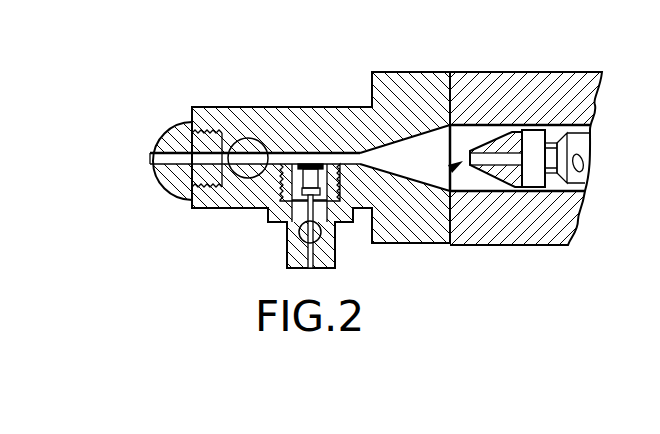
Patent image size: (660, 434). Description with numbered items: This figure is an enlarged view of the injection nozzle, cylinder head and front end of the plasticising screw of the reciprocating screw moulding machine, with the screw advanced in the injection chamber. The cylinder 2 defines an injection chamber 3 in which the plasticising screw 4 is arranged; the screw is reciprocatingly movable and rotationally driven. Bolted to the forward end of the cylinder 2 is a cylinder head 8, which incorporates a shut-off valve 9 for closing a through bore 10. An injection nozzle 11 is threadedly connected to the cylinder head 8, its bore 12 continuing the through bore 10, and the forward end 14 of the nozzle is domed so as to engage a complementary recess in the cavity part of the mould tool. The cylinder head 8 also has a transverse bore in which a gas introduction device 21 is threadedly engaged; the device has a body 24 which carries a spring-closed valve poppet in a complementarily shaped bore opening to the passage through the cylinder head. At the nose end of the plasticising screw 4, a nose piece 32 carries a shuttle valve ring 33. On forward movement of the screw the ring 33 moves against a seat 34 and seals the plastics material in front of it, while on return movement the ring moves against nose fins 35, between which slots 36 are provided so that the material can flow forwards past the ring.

The cylinder 2 is at (555, 75).
The injection chamber 3 is at (487, 186).
The plasticising screw 4 is at (587, 146).
The cylinder head 8 is at (417, 74).
The shut-off valve 9 is at (248, 142).
The through bore 10 is at (305, 160).
The injection nozzle 11 is at (182, 124).
The bore 12 is at (167, 165).
The forward end 14 is at (162, 172).
The gas introduction device 21 is at (280, 245).
The body 24 is at (347, 225).
The nose piece 32 is at (448, 170).
The shuttle valve ring 33 is at (563, 198).
The seat 34 is at (574, 122).
The nose fins 35 is at (535, 185).
The slots 36 is at (503, 138).